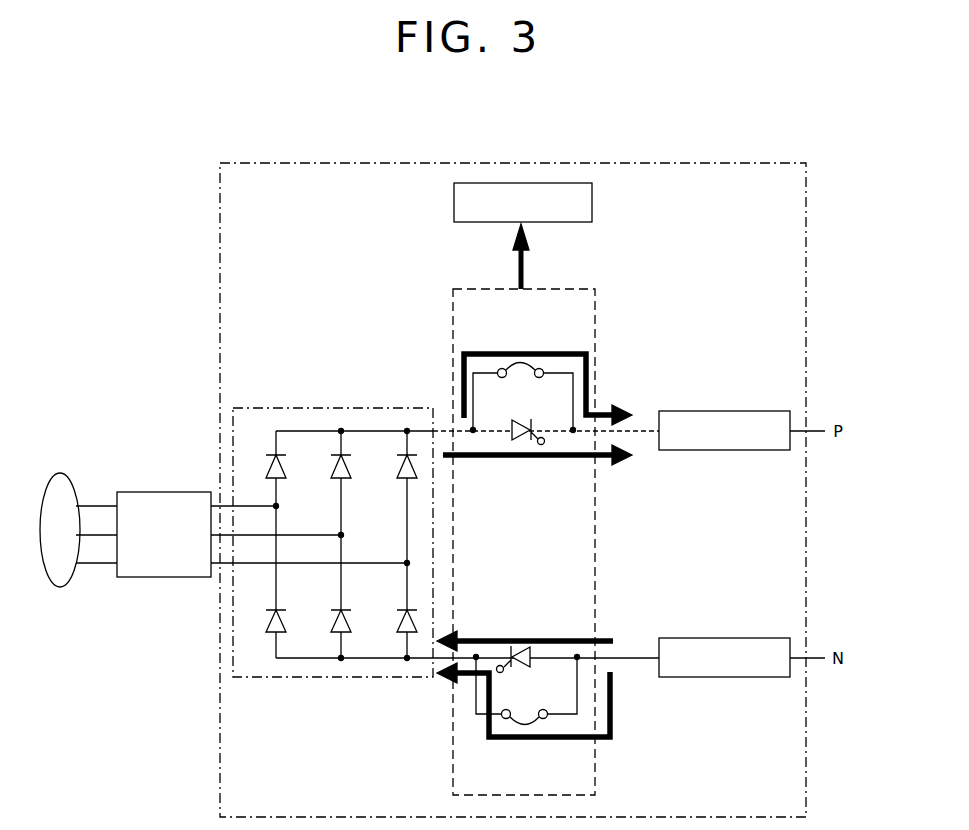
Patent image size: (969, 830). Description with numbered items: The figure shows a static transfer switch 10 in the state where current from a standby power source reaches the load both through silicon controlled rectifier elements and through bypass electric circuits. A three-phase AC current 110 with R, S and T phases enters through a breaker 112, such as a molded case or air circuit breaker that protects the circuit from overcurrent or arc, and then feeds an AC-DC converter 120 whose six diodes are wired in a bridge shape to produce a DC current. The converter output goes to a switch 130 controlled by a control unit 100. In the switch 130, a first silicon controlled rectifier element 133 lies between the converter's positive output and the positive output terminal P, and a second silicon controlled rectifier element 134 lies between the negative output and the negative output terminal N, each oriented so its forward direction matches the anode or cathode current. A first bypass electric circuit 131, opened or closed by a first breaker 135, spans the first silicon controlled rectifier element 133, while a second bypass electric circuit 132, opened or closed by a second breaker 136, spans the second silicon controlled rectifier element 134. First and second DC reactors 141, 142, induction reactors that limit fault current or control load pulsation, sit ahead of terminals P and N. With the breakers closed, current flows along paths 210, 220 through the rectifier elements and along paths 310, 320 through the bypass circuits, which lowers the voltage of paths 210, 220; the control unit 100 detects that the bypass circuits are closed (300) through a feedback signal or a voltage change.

The static transfer switch 10 is at (814, 178).
The control unit 100 is at (592, 202).
The three-phase AC current 110 is at (60, 473).
The breaker 112 is at (160, 492).
The AC-DC converter 120 is at (334, 408).
The switch 130 is at (563, 289).
The first bypass electric circuit 131 is at (574, 400).
The second bypass electric circuit 132 is at (580, 685).
The first silicon controlled rectifier element 133 is at (521, 443).
The second silicon controlled rectifier element 134 is at (521, 645).
The first breaker 135 is at (521, 352).
The second breaker 136 is at (524, 742).
The first DC reactor 141 is at (722, 411).
The second DC reactor 142 is at (724, 638).
The path 210 is at (489, 458).
The path 220 is at (566, 638).
The detection of closed bypass electric circuits 300 is at (518, 264).
The path 310 is at (553, 352).
The path 320 is at (575, 741).